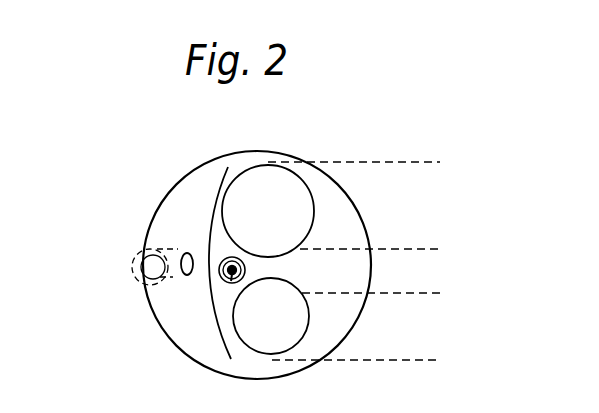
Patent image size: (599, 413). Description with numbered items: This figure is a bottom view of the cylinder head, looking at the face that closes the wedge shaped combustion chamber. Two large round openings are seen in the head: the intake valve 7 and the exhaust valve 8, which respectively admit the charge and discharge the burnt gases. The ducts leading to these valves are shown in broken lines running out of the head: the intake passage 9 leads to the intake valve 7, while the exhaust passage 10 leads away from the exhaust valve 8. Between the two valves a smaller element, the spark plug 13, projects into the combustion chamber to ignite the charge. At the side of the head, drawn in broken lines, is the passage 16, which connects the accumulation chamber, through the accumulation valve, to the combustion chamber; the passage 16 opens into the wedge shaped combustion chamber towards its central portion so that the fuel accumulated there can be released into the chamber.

The intake valve 7 is at (292, 181).
The exhaust valve 8 is at (293, 328).
The intake passage 9 is at (394, 162).
The exhaust passage 10 is at (374, 360).
The spark plug 13 is at (228, 275).
The passage 16 is at (174, 277).